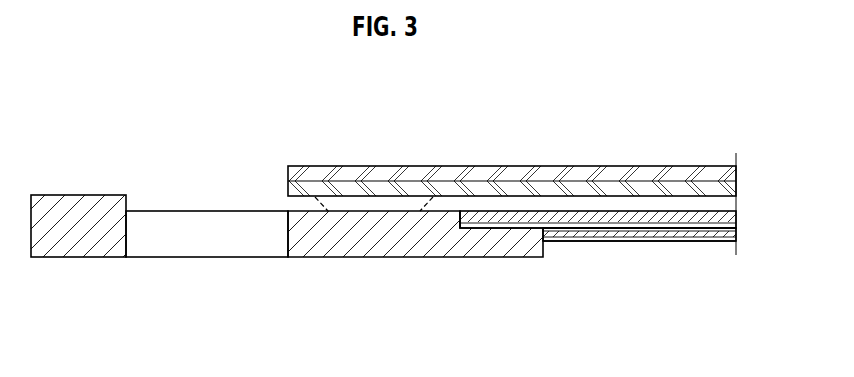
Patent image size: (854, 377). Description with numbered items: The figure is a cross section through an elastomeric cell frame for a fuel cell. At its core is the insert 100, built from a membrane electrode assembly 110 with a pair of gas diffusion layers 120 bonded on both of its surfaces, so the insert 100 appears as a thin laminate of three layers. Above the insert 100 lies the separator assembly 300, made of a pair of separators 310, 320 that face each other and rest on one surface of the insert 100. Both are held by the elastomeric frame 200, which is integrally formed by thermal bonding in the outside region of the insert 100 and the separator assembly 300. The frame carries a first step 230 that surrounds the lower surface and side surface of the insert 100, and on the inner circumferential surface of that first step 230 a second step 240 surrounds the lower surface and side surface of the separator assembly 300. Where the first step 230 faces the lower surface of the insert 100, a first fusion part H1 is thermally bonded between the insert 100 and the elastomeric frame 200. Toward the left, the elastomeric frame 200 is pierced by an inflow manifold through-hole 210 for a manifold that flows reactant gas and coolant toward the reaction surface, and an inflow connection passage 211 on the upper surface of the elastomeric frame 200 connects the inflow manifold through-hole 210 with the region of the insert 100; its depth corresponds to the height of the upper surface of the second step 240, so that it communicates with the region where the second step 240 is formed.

The insert 100 is at (641, 288).
The membrane electrode assembly 110 is at (651, 233).
The gas diffusion layers 120 is at (617, 238).
The elastomeric frame 200 is at (362, 246).
The inflow manifold through-hole 210 is at (209, 238).
The inflow connection passage 211 is at (305, 202).
The first step 230 is at (536, 222).
The second step 240 is at (445, 212).
The separator assembly 300 is at (513, 129).
The separator 310 is at (593, 185).
The separator 320 is at (582, 92).
The first fusion part H1 is at (491, 232).